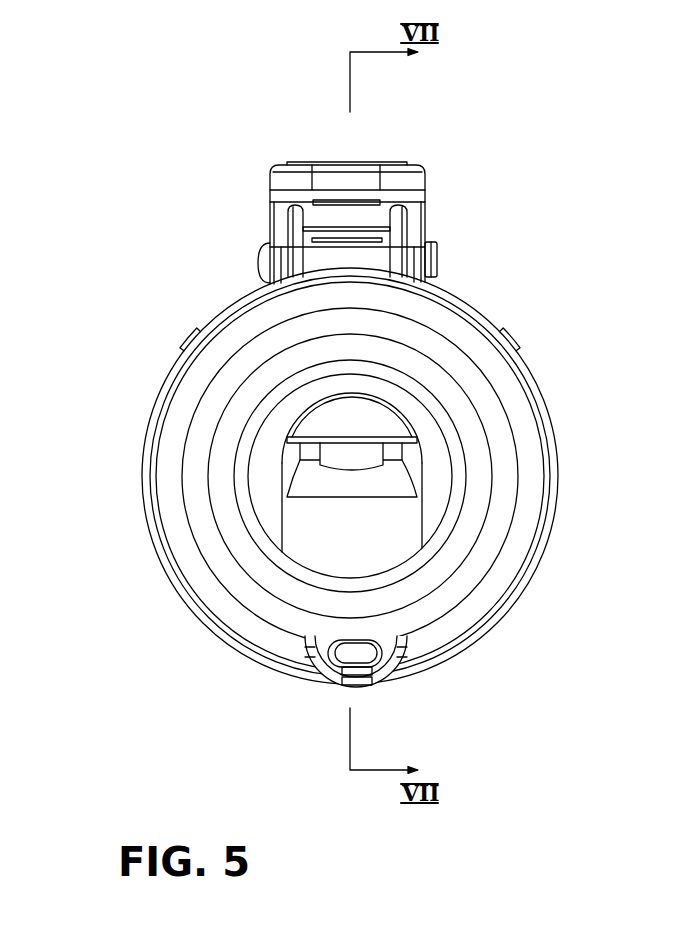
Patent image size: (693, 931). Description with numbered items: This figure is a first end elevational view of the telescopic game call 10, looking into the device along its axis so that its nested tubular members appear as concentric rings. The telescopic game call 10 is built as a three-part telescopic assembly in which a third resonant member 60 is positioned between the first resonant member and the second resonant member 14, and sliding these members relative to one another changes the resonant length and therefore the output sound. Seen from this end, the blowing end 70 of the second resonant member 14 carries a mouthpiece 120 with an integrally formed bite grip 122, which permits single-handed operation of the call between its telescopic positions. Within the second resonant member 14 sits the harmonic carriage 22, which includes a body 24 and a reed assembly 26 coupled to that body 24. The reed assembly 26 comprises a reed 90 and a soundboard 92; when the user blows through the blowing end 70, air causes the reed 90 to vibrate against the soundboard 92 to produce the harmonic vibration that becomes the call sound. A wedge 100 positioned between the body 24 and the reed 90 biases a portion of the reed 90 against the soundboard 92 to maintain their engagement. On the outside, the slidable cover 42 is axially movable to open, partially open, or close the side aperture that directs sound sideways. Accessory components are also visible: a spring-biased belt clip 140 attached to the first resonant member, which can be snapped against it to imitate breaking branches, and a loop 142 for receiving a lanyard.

The telescopic game call 10 is at (550, 330).
The second resonant member 14 is at (522, 468).
The harmonic carriage 22 is at (248, 470).
The body 24 is at (438, 387).
The reed assembly 26 is at (297, 414).
The slidable cover 42 is at (545, 397).
The third resonant member 60 is at (482, 573).
The blowing end 70 is at (248, 537).
The reed 90 is at (347, 437).
The soundboard 92 is at (320, 527).
The wedge 100 is at (413, 413).
The mouthpiece 120 is at (413, 588).
The bite grip 122 is at (375, 420).
The belt clip 140 is at (303, 162).
The loop 142 is at (312, 662).